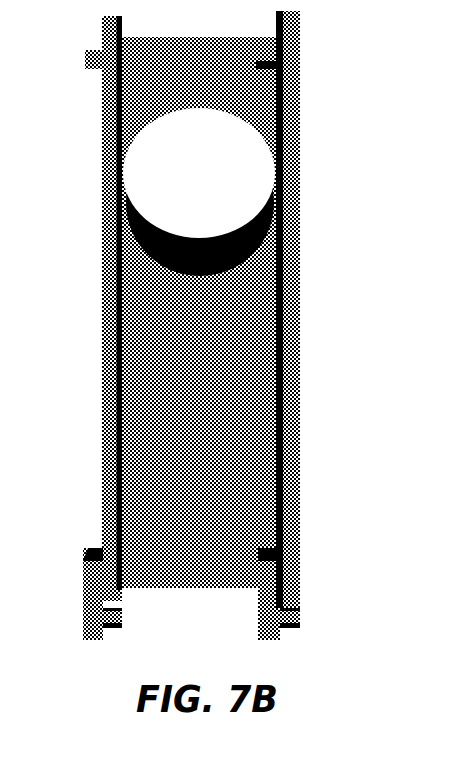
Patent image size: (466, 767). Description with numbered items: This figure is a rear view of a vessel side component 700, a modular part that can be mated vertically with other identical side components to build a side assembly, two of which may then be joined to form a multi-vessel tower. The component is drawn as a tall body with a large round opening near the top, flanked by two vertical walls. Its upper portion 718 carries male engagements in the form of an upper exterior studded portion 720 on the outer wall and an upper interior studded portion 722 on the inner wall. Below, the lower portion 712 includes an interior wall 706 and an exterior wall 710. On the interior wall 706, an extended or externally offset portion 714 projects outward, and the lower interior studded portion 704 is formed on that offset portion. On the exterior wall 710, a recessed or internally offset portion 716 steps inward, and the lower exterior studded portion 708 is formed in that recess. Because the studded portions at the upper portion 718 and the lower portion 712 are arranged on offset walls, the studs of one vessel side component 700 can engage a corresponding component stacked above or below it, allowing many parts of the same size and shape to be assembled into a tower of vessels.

The vessel side component 700 is at (330, 110).
The lower interior studded portion 704 is at (99, 613).
The interior wall 706 is at (100, 616).
The lower exterior studded portion 708 is at (284, 614).
The exterior wall 710 is at (272, 633).
The lower portion 712 is at (63, 492).
The externally offset portion 714 is at (87, 577).
The internally offset portion 716 is at (262, 577).
The upper portion 718 is at (68, 92).
The upper exterior studded portion 720 is at (77, 57).
The upper interior studded portion 722 is at (256, 57).